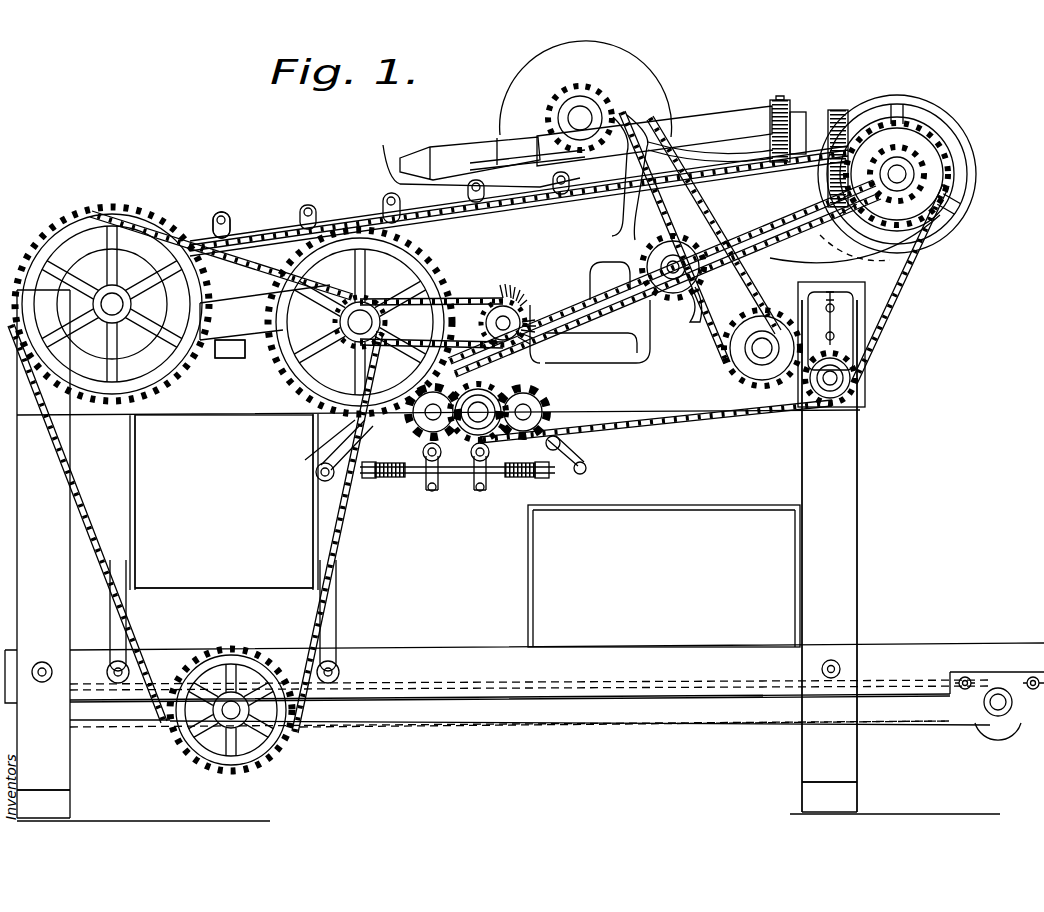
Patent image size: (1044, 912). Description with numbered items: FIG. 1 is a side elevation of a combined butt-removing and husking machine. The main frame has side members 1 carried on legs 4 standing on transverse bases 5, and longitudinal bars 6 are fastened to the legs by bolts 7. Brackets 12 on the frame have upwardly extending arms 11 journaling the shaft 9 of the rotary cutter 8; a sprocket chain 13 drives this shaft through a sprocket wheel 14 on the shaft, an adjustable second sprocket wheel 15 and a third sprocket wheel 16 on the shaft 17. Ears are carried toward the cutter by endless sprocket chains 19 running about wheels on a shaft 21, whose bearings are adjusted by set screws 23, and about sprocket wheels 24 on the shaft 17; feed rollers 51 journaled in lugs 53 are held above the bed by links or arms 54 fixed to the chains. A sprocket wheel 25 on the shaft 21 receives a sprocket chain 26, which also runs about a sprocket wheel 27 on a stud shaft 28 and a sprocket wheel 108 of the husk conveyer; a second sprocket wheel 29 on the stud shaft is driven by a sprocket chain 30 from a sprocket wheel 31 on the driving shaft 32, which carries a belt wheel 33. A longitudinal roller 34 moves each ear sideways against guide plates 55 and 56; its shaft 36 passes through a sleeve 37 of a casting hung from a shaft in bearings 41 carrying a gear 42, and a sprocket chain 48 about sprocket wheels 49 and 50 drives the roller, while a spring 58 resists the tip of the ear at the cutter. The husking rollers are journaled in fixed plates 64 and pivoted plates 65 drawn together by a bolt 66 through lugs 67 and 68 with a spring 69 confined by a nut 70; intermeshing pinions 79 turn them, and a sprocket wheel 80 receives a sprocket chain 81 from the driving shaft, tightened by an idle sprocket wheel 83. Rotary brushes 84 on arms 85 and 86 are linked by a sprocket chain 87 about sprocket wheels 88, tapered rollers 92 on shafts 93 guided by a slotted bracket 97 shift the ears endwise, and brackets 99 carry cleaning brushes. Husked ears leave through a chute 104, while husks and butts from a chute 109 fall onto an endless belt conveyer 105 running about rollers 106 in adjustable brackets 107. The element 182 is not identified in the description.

The side members 1 is at (262, 398).
The legs 4 is at (858, 543).
The bases 5 is at (805, 782).
The longitudinal side bars 6 is at (360, 660).
The bolts 7 is at (837, 649).
The rotary cutter 8 is at (628, 50).
The cutter shaft 9 is at (583, 110).
The upwardly extending arms 11 is at (640, 125).
The brackets 12 is at (850, 258).
The sprocket chain 13 is at (668, 120).
The sprocket wheel 14 is at (560, 103).
The second sprocket wheel 15 is at (765, 375).
The third sprocket wheel 16 is at (640, 300).
The shaft 17 is at (720, 245).
The feed sprocket chains 19 is at (625, 360).
The shaft 21 is at (132, 304).
The set screws 23 is at (820, 190).
The sprocket wheels 24 is at (635, 325).
The sprocket wheel 25 is at (200, 288).
The sprocket chain 26 is at (80, 515).
The sprocket wheel 27 is at (360, 322).
The stud shaft 28 is at (356, 330).
The second sprocket wheel 29 is at (430, 270).
The sprocket chain 30 is at (505, 215).
The sprocket wheel 31 is at (915, 172).
The driving shaft 32 is at (945, 140).
The belt wheel 33 is at (972, 212).
The roller 34 is at (425, 148).
The roller shaft 36 is at (815, 108).
The sleeve 37 is at (715, 110).
The bearings 41 is at (826, 105).
The gear 42 is at (840, 108).
The sprocket chain 48 is at (762, 100).
The sprocket wheel 49 is at (780, 96).
The sprocket wheel 50 is at (770, 178).
The feed rollers 51 is at (255, 310).
The lugs 53 is at (225, 352).
The links or arms 54 is at (215, 355).
The guide plate 55 is at (398, 150).
The lower guide plate 56 is at (445, 225).
The spring 58 is at (480, 145).
The fixed plates 64 is at (470, 470).
The pivoted plates 65 is at (600, 360).
The bolt 66 is at (578, 472).
The lug 67 is at (478, 495).
The lug 68 is at (515, 478).
The spring 69 is at (525, 448).
The nut 70 is at (540, 480).
The pinion 79 is at (565, 408).
The sprocket wheel 80 is at (482, 492).
The sprocket chain 81 is at (650, 442).
The idle sprocket wheel 83 is at (855, 378).
The rotary brushes 84 is at (520, 290).
The parallel arms 85 is at (490, 285).
The second arms 86 is at (366, 305).
The sprocket chain 87 is at (465, 288).
The sprocket wheels 88 is at (532, 310).
The tapered rollers 92 is at (602, 348).
The shaft 93 is at (572, 271).
The bracket 97 is at (600, 235).
The brackets 99 is at (440, 520).
The chute 104 is at (248, 570).
The endless belt conveyer 105 is at (495, 724).
The drums or rollers 106 is at (983, 716).
The brackets 107 is at (215, 690).
The sprocket wheel 108 is at (265, 752).
The chute 109 is at (552, 558).
The spoke 182 is at (910, 138).